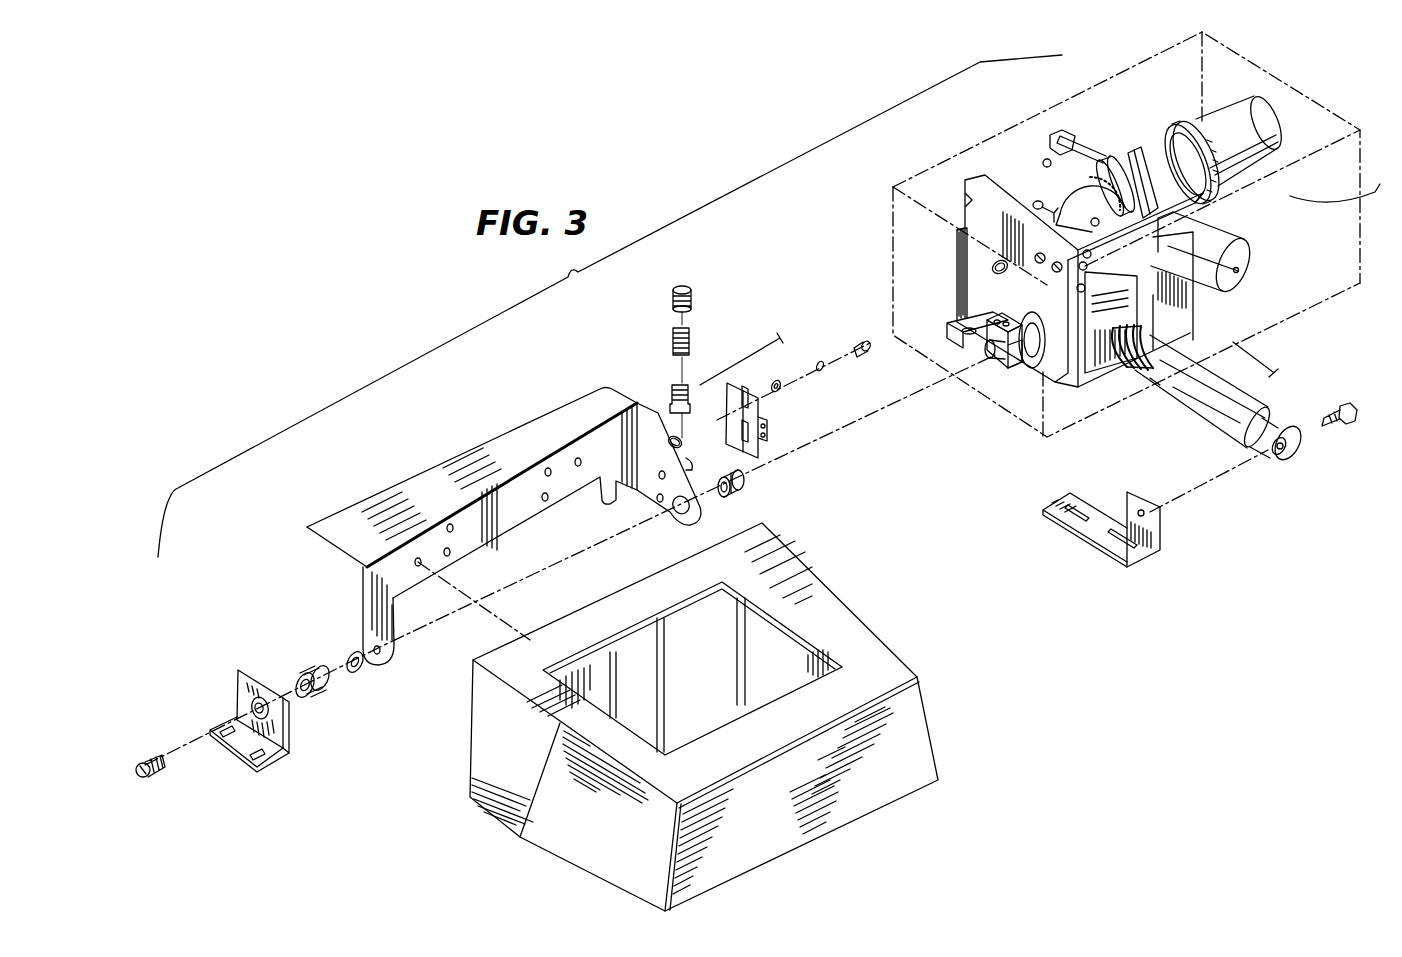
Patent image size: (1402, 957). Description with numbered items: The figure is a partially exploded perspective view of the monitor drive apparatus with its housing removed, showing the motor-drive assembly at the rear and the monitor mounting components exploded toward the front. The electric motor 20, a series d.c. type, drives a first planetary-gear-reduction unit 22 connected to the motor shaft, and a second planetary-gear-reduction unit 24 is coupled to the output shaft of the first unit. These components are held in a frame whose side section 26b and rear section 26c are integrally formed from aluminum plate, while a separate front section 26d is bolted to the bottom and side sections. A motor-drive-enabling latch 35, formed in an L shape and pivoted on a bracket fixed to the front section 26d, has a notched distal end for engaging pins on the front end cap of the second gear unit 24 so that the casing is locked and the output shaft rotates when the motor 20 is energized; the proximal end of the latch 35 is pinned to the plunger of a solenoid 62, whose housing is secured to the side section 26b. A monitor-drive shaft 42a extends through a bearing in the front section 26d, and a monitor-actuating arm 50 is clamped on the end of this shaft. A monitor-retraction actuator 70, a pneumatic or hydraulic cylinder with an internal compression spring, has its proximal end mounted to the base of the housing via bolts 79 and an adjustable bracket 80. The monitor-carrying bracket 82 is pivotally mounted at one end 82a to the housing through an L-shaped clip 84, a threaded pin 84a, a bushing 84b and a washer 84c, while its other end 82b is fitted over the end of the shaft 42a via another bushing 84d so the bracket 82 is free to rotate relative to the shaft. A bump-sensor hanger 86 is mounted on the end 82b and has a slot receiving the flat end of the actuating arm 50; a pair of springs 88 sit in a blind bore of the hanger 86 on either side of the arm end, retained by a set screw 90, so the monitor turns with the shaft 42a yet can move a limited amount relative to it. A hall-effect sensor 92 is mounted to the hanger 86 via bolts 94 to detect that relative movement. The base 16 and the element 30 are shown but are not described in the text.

The base 16 is at (704, 671).
The electric motor 20 is at (1226, 128).
The first planetary-gear-reduction unit 22 is at (1170, 152).
The second planetary-gear-reduction unit 24 is at (1055, 162).
The side section 26b is at (1155, 303).
The rear section 26c is at (1140, 156).
The front section 26d is at (977, 267).
The bearing 30 is at (1114, 153).
The motor-drive-enabling latch 35 is at (1040, 203).
The monitor-drive shaft 42a is at (987, 354).
The monitor-actuating arm 50 is at (1029, 375).
The solenoid 62 is at (1243, 243).
The monitor-retraction actuator 70 is at (1174, 415).
The bolts 79 is at (1333, 430).
The adjustable bracket 80 is at (1077, 500).
The monitor-carrying bracket 82 is at (504, 510).
The end of monitor-carrying bracket 82a is at (350, 616).
The other end of monitor bracket 82b is at (673, 514).
The L-shaped clip 84 is at (262, 692).
The threaded pin 84a is at (143, 760).
The bushing 84b is at (317, 698).
The washer 84c is at (362, 677).
The bushing 84d is at (748, 482).
The bump-sensor hanger 86 is at (678, 436).
The springs 88 is at (670, 398).
The set screw 90 is at (698, 298).
The hall-effect sensor 92 is at (778, 411).
The bolts 94 is at (860, 354).